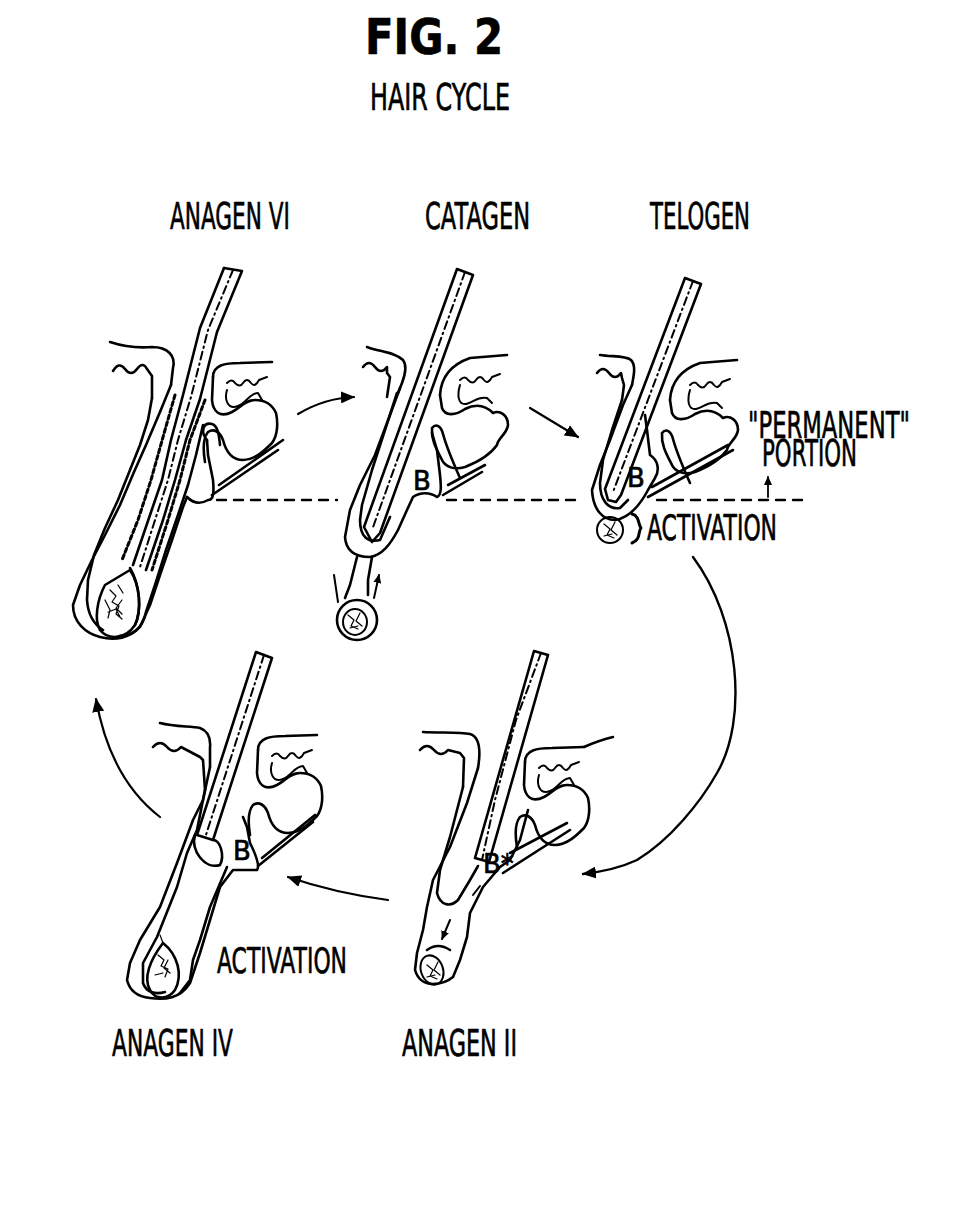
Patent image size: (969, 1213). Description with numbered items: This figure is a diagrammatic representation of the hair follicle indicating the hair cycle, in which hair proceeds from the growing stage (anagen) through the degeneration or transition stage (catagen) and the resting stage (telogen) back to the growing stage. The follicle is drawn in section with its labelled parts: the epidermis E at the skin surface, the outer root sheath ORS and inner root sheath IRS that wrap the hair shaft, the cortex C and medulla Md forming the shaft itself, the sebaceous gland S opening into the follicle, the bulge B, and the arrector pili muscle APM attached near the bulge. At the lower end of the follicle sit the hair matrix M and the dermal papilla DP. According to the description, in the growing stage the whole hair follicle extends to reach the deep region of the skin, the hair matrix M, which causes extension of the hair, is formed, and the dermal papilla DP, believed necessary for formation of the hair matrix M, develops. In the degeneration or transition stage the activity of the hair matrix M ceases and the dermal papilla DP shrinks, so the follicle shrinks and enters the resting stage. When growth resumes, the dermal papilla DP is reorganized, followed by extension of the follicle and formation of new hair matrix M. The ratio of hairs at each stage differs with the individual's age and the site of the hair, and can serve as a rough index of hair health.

The epidermis E is at (142, 370).
The outer root sheath ORS is at (150, 428).
The inner root sheath IRS is at (155, 457).
The cortex C is at (160, 487).
The medulla Md is at (150, 510).
The sebaceous gland S is at (240, 412).
The bulge B is at (203, 463).
The arrector pili muscle APM is at (247, 470).
The hair matrix M is at (130, 563).
The dermal papilla DP is at (103, 630).